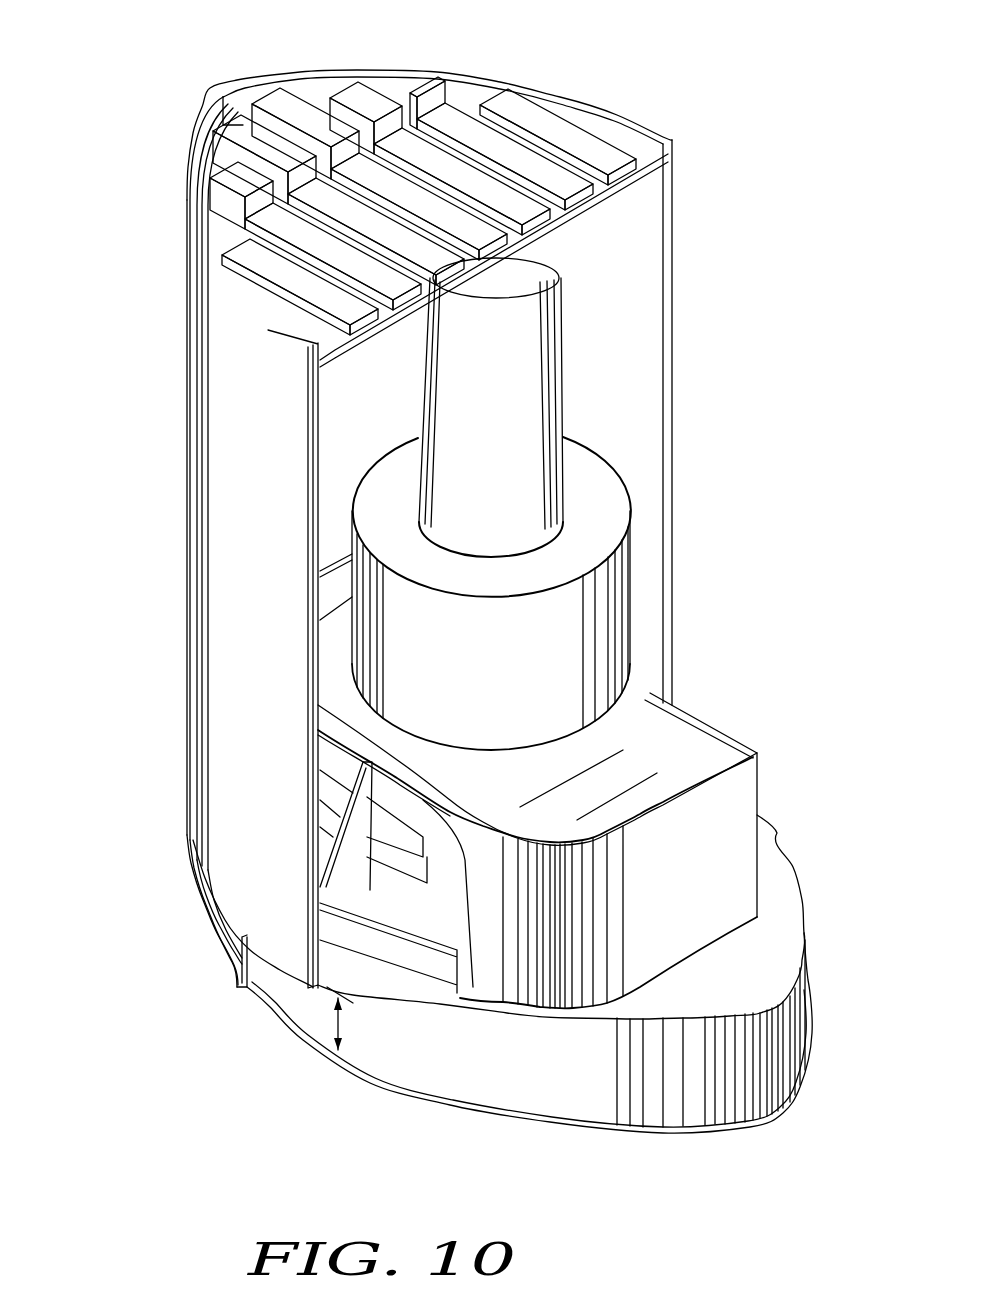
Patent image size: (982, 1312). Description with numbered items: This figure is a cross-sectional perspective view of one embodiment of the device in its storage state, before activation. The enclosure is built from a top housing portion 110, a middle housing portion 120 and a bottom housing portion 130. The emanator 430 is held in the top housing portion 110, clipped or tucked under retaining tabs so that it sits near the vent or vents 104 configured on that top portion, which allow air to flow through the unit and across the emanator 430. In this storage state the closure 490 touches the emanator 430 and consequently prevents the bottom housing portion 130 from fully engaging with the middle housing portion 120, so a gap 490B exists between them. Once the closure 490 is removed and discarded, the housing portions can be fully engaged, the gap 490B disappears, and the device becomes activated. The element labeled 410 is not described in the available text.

The vent 104 is at (436, 57).
The top housing portion 110 is at (565, 138).
The middle housing portion 120 is at (187, 527).
The bottom housing portion 130 is at (505, 1097).
The driver housing 410 is at (647, 763).
The emanator 430 is at (607, 197).
The closure 490 is at (547, 388).
The gap 490B is at (345, 1033).